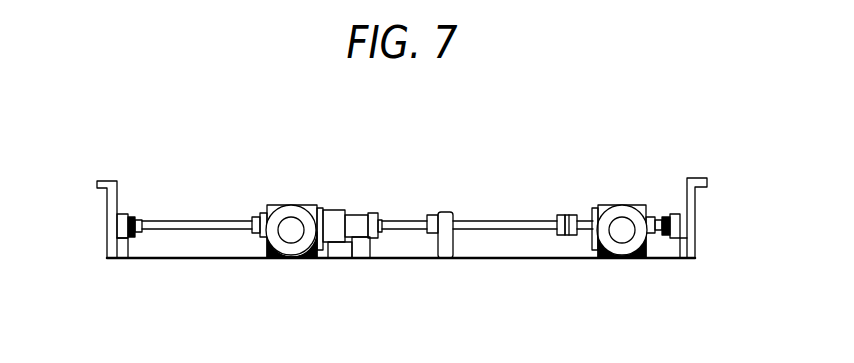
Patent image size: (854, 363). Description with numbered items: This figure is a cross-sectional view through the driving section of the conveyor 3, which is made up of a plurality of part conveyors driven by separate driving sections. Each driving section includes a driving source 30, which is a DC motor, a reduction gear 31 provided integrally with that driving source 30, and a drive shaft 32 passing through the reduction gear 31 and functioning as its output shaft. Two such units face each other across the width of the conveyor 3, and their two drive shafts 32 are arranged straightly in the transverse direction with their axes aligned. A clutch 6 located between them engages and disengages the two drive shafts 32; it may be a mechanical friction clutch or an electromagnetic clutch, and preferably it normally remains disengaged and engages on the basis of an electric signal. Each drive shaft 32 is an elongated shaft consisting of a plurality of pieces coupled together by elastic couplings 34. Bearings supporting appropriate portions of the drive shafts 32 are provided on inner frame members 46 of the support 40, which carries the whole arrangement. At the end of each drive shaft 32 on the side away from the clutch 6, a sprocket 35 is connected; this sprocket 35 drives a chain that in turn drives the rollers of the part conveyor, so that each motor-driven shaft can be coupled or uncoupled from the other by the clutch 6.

The conveyor 3 is at (427, 274).
The clutch 6 is at (332, 210).
The driving source 30 is at (287, 205).
The reduction gear 31 is at (314, 208).
The drive shaft 32 is at (206, 220).
The elastic coupling 34 is at (336, 243).
The sprocket 35 is at (131, 215).
The support 40 is at (177, 260).
The inner frame member 46 is at (375, 259).